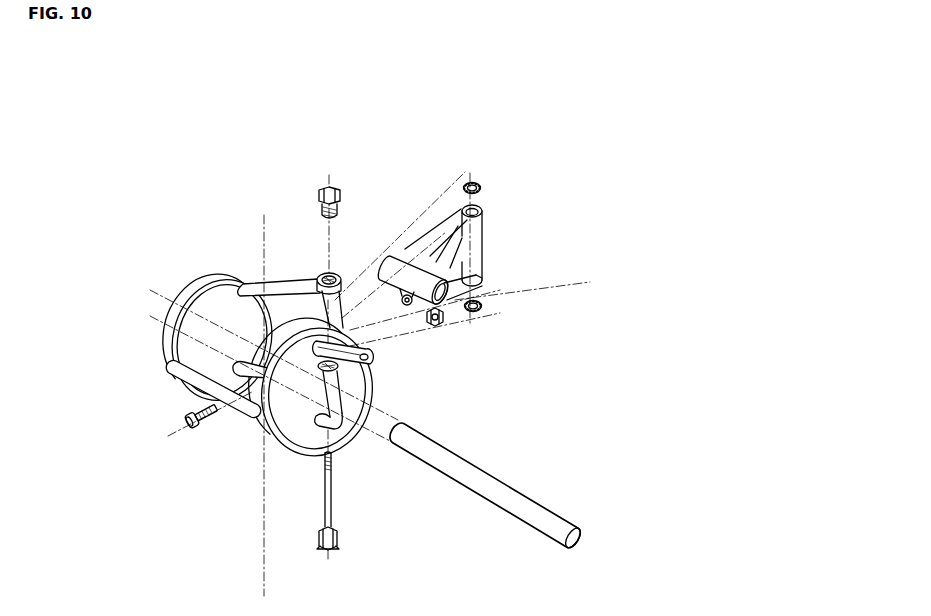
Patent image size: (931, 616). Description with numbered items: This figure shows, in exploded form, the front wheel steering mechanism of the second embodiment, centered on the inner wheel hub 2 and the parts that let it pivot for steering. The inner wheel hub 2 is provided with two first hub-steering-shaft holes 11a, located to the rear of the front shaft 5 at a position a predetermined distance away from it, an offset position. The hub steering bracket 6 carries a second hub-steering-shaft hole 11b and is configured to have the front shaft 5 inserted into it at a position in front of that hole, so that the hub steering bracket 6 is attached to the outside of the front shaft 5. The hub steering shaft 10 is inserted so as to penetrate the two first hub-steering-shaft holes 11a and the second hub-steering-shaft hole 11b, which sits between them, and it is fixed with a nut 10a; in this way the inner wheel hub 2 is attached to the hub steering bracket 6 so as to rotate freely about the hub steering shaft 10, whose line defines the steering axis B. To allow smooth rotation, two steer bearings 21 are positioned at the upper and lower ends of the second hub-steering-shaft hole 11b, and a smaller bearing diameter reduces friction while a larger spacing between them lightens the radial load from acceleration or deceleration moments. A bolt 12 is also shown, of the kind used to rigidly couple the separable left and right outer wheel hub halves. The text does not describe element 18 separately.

The inner wheel hub 2 is at (345, 422).
The front shaft 5 is at (532, 517).
The hub steering bracket 6 is at (480, 270).
The hub steering shaft 10 is at (322, 520).
The nut 10a is at (318, 206).
The first hub-steering-shaft hole 11a is at (318, 277).
The second hub-steering-shaft hole 11b is at (487, 211).
The bolt 12 is at (193, 430).
The pin hole 18 is at (378, 365).
The steer bearing 21 is at (483, 186).
The steering axis B is at (328, 242).